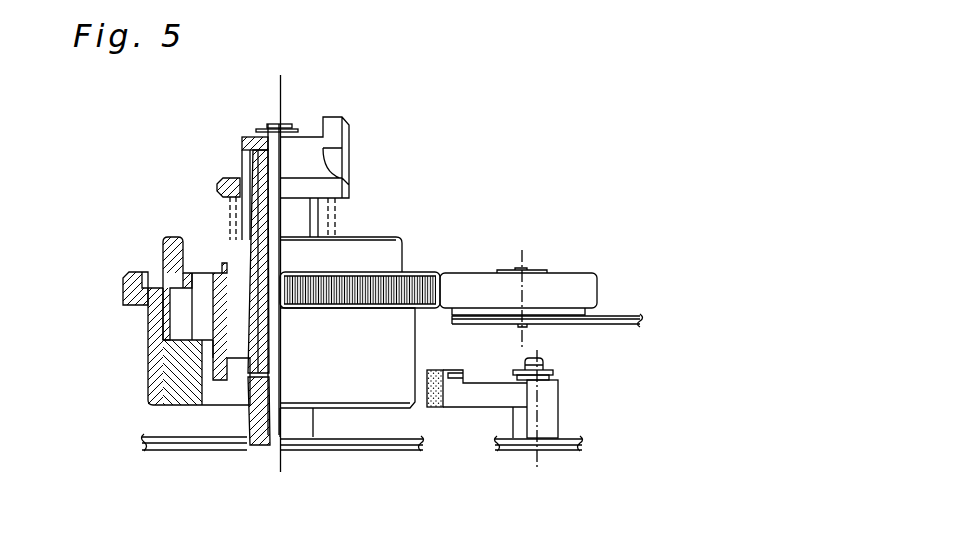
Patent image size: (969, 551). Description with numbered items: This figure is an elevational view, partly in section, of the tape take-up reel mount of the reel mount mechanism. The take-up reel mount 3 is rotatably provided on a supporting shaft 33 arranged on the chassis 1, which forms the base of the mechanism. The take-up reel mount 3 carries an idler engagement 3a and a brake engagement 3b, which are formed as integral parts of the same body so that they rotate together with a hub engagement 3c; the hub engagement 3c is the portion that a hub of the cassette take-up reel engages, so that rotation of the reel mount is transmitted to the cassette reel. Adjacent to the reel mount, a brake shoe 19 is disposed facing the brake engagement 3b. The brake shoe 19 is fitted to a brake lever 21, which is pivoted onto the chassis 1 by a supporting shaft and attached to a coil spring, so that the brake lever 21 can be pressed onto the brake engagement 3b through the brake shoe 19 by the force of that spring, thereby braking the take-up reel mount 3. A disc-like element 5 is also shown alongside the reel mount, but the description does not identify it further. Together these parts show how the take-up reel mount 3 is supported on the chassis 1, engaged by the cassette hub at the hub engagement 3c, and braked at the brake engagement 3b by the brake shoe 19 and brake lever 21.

The chassis 1 is at (370, 446).
The take-up reel mount 3 is at (398, 238).
The idler engagement 3a is at (122, 292).
The brake engagement 3b is at (148, 383).
The hub engagement 3c is at (241, 157).
The disc 5 is at (566, 283).
The brake shoe 19 is at (433, 407).
The brake lever 21 is at (488, 393).
The supporting shaft 33 is at (275, 448).